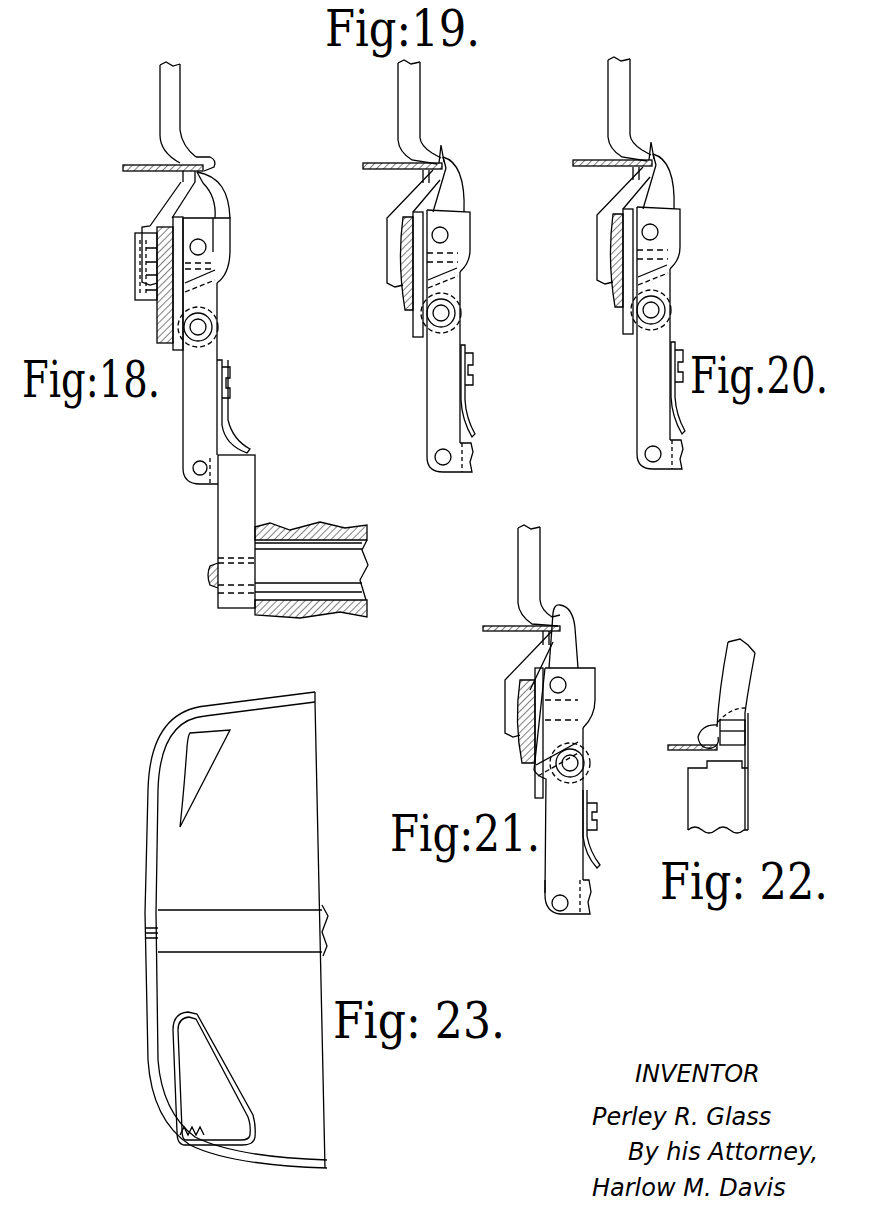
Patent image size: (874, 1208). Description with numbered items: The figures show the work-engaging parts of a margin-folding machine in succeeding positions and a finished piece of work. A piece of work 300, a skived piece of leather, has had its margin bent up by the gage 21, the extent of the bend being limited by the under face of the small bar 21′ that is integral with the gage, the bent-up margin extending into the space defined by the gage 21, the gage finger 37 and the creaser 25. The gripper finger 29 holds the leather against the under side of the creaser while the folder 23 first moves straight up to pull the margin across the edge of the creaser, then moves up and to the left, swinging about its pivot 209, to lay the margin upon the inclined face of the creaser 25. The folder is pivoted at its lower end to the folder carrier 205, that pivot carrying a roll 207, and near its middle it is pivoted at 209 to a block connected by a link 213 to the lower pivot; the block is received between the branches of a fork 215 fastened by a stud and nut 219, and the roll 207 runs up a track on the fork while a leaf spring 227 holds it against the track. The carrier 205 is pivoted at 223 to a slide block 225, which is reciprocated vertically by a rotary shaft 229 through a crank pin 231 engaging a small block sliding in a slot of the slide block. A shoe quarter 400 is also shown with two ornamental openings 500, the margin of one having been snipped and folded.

In FIG. 18, the creaser 25 is at (168, 118).
In FIG. 19, the creaser 25 is at (412, 103).
In FIG. 20, the creaser 25 is at (642, 109).
In FIG. 21, the creaser 25 is at (528, 563).
In FIG. 18, the piece of work 300 is at (133, 165).
In FIG. 19, the piece of work 300 is at (382, 163).
In FIG. 20, the piece of work 300 is at (600, 145).
In FIG. 21, the piece of work 300 is at (505, 623).
In FIG. 22, the piece of work 300 is at (680, 745).
In FIG. 18, the folder 23 is at (213, 195).
In FIG. 19, the folder 23 is at (459, 189).
In FIG. 20, the folder 23 is at (681, 181).
In FIG. 21, the folder 23 is at (565, 647).
In FIG. 18, the gripper finger 29 is at (165, 205).
In FIG. 19, the gripper finger 29 is at (402, 206).
In FIG. 20, the gripper finger 29 is at (605, 225).
In FIG. 21, the gripper finger 29 is at (522, 668).
In FIG. 18, the nut 219 is at (150, 275).
In FIG. 18, the fork 215 is at (223, 260).
In FIG. 19, the fork 215 is at (467, 244).
In FIG. 20, the fork 215 is at (691, 238).
In FIG. 18, the pivot 209 is at (204, 247).
In FIG. 18, the link 213 is at (207, 297).
In FIG. 19, the link 213 is at (452, 289).
In FIG. 20, the link 213 is at (685, 338).
In FIG. 21, the link 213 is at (580, 740).
In FIG. 18, the roll 207 is at (220, 330).
In FIG. 18, the folder carrier 205 is at (192, 418).
In FIG. 18, the leaf spring 227 is at (223, 427).
In FIG. 19, the leaf spring 227 is at (463, 402).
In FIG. 20, the leaf spring 227 is at (709, 388).
In FIG. 21, the leaf spring 227 is at (588, 838).
In FIG. 18, the pivot 223 is at (200, 470).
In FIG. 18, the slide block 225 is at (245, 490).
In FIG. 18, the rotary shaft 229 is at (348, 563).
In FIG. 18, the crank pin 231 is at (213, 587).
In FIG. 22, the gage finger 37 is at (730, 672).
In FIG. 22, the small bar 21′ is at (745, 708).
In FIG. 22, the gage 21 is at (735, 740).
In FIG. 23, the shoe quarter 400 is at (300, 850).
In FIG. 23, the ornamental openings 500 is at (205, 761).